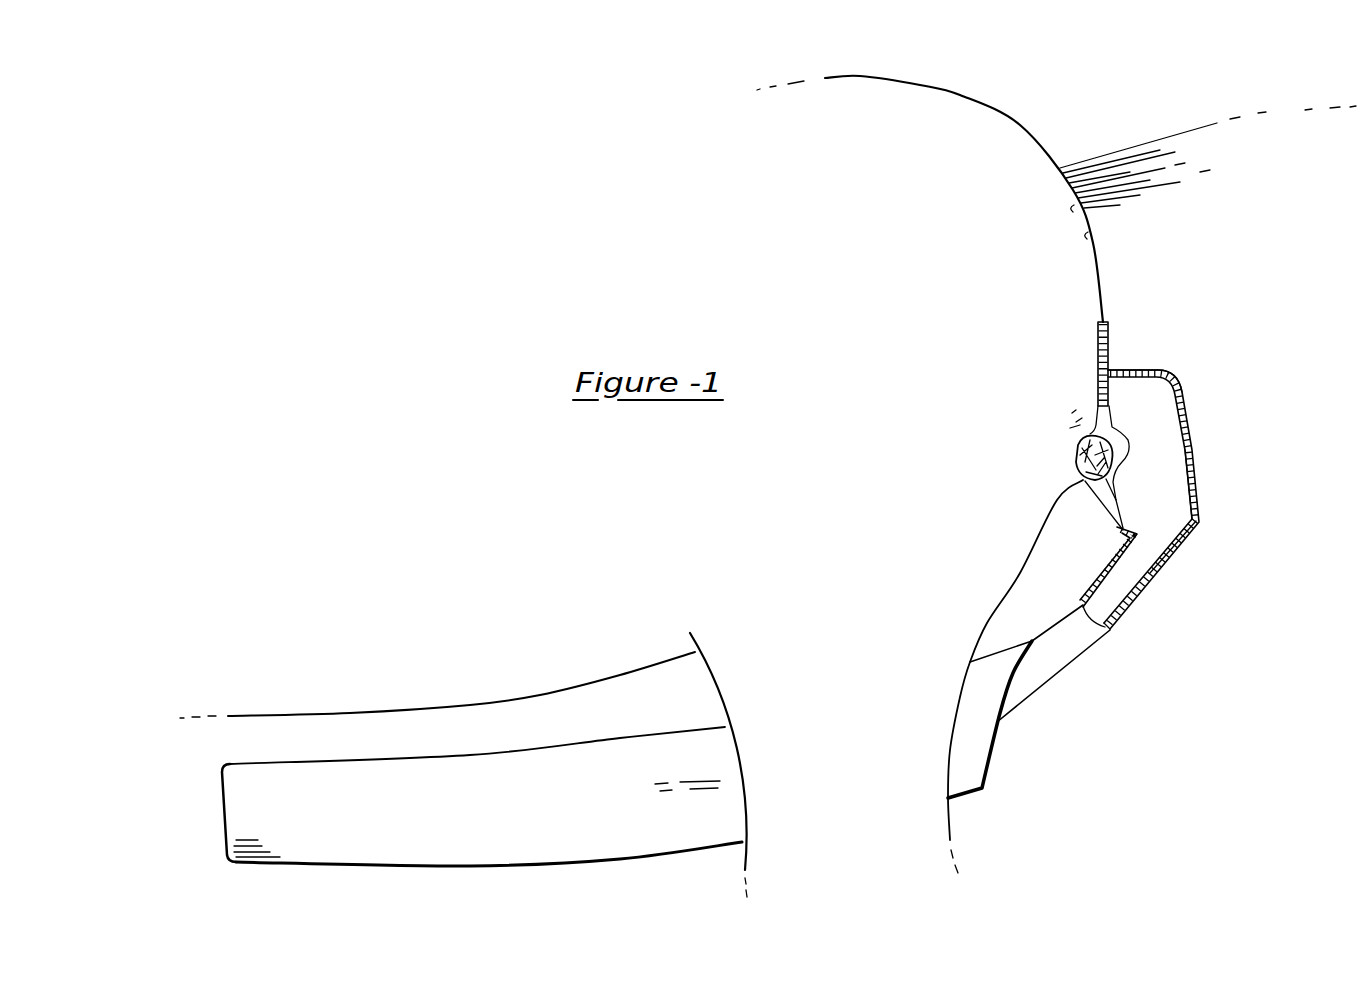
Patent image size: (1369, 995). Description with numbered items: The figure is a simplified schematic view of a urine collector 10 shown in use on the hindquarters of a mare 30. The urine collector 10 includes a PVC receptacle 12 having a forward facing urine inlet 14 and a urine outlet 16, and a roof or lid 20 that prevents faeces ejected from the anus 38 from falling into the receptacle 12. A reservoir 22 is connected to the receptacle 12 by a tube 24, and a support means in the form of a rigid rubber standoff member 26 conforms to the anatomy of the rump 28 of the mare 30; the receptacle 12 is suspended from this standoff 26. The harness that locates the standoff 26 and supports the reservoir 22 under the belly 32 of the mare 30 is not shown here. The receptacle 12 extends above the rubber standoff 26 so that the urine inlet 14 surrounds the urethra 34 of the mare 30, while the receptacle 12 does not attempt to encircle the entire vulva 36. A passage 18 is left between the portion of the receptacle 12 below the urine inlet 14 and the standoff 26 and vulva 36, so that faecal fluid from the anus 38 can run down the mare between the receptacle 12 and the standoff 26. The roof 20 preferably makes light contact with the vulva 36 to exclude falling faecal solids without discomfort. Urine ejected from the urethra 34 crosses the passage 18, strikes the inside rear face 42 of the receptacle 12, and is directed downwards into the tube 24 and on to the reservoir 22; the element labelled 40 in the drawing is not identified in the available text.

The urine collector 10 is at (1228, 468).
The receptacle 12 is at (1201, 450).
The urine inlet 14 is at (1113, 415).
The urine outlet 16 is at (1165, 528).
The passage 18 is at (1117, 450).
The roof 20 is at (1137, 370).
The reservoir 22 is at (530, 820).
The tube 24 is at (1077, 652).
The rubber standoff member 26 is at (1075, 452).
The rump 28 is at (1024, 514).
The mare 30 is at (986, 105).
The belly 32 is at (500, 694).
The urethra 34 is at (1100, 408).
The vulva 36 is at (1098, 333).
The anus 38 is at (1078, 222).
The neck portion 40 is at (1117, 507).
The inside rear face 42 is at (1186, 492).